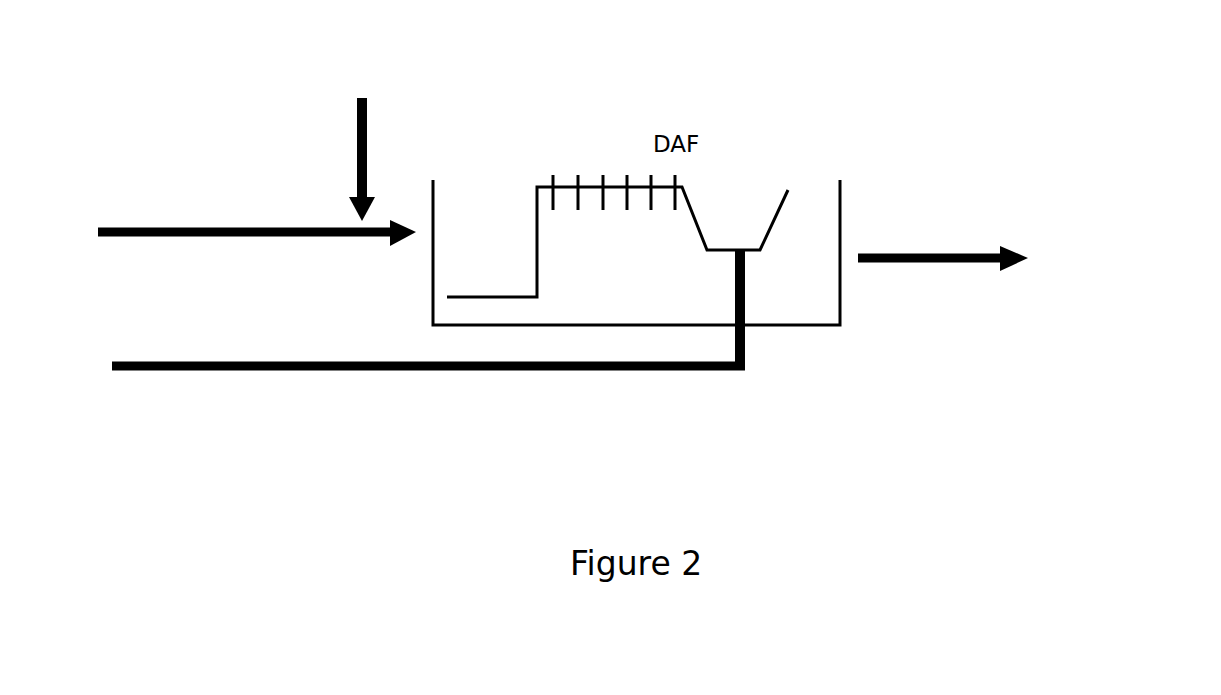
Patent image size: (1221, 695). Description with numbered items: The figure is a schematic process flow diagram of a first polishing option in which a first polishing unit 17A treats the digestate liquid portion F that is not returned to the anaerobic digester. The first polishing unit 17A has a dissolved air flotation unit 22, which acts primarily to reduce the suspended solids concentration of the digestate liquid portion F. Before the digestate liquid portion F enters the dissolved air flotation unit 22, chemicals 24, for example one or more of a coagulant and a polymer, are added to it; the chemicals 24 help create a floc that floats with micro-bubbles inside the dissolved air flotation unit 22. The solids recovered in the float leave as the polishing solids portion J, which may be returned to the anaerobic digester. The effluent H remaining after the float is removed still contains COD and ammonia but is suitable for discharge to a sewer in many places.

The first polishing unit 17A is at (876, 140).
The dissolved air flotation unit 22 is at (567, 178).
The chemicals 24 is at (363, 138).
The digestate liquid portion F is at (160, 237).
The effluent H is at (935, 255).
The polishing solids portion J is at (388, 367).